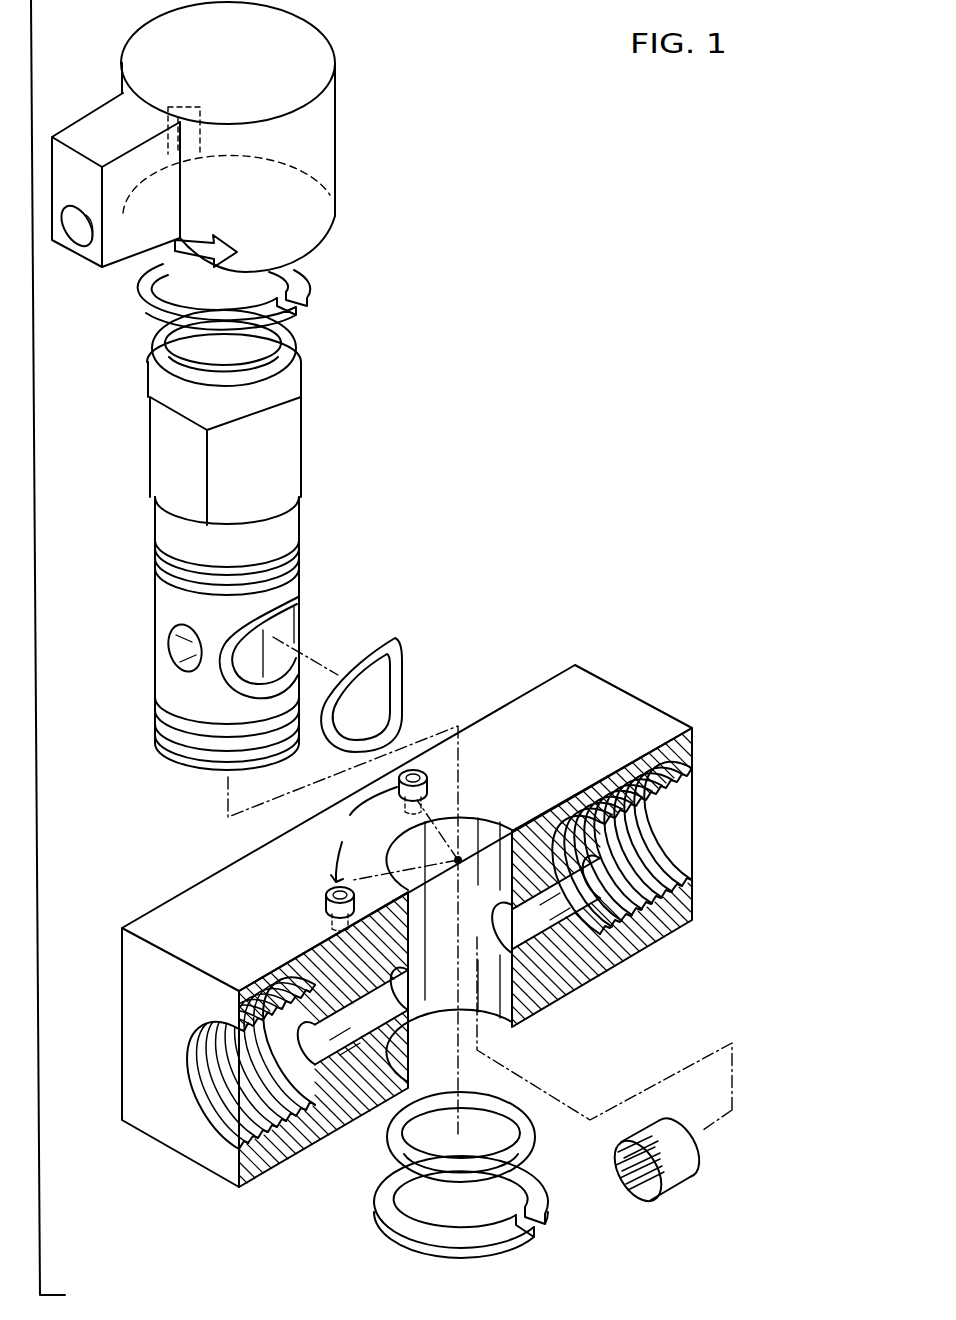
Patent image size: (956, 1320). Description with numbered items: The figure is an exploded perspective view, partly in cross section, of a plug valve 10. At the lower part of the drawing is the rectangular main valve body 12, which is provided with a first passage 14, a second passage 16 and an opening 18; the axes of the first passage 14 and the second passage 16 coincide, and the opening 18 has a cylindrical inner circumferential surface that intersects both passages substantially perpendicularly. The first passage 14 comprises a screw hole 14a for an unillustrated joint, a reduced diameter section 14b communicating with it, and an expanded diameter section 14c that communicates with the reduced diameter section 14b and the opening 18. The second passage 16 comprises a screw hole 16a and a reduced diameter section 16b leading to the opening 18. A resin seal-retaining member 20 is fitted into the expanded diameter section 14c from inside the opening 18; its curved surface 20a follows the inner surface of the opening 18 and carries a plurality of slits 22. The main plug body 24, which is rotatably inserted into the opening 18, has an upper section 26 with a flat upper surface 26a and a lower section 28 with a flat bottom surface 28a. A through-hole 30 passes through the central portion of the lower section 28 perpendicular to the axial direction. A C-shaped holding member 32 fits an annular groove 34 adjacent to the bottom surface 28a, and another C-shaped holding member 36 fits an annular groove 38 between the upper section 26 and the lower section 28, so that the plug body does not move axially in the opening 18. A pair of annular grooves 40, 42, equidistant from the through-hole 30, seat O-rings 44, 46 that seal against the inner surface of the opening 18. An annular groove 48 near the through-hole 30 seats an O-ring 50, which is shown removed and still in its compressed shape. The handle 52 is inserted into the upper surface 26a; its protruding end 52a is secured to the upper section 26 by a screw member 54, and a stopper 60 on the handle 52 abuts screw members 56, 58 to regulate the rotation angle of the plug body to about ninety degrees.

The plug valve 10 is at (487, 195).
The main valve body 12 is at (629, 678).
The first passage 14 is at (677, 827).
The screw hole 14a is at (650, 886).
The reduced diameter section 14b is at (590, 900).
The expanded diameter section 14c is at (547, 903).
The second passage 16 is at (194, 1109).
The screw hole 16a is at (237, 1073).
The reduced diameter section 16b is at (387, 1043).
The opening 18 is at (487, 847).
The seal-retaining member 20 is at (710, 1186).
The curved surface 20a is at (627, 1178).
The slits 22 is at (683, 1190).
The main plug body 24 is at (312, 440).
The upper section 26 is at (160, 445).
The upper surface 26a is at (158, 383).
The lower section 28 is at (165, 611).
The bottom surface 28a is at (207, 771).
The through-hole 30 is at (170, 652).
The holding member 32 is at (548, 1178).
The annular groove 34 is at (176, 746).
The holding member 36 is at (306, 283).
The annular groove 38 is at (192, 557).
The annular groove 40 is at (288, 567).
The annular groove 42 is at (165, 707).
The O-ring 44 is at (536, 1137).
The O-ring 46 is at (291, 338).
The annular groove 48 is at (296, 594).
The O-ring 50 is at (381, 650).
The handle 52 is at (336, 131).
The protruding end 52a is at (84, 133).
The screw member 54 is at (78, 234).
The screw member 56 is at (330, 897).
The screw member 58 is at (433, 773).
The stopper 60 is at (194, 106).